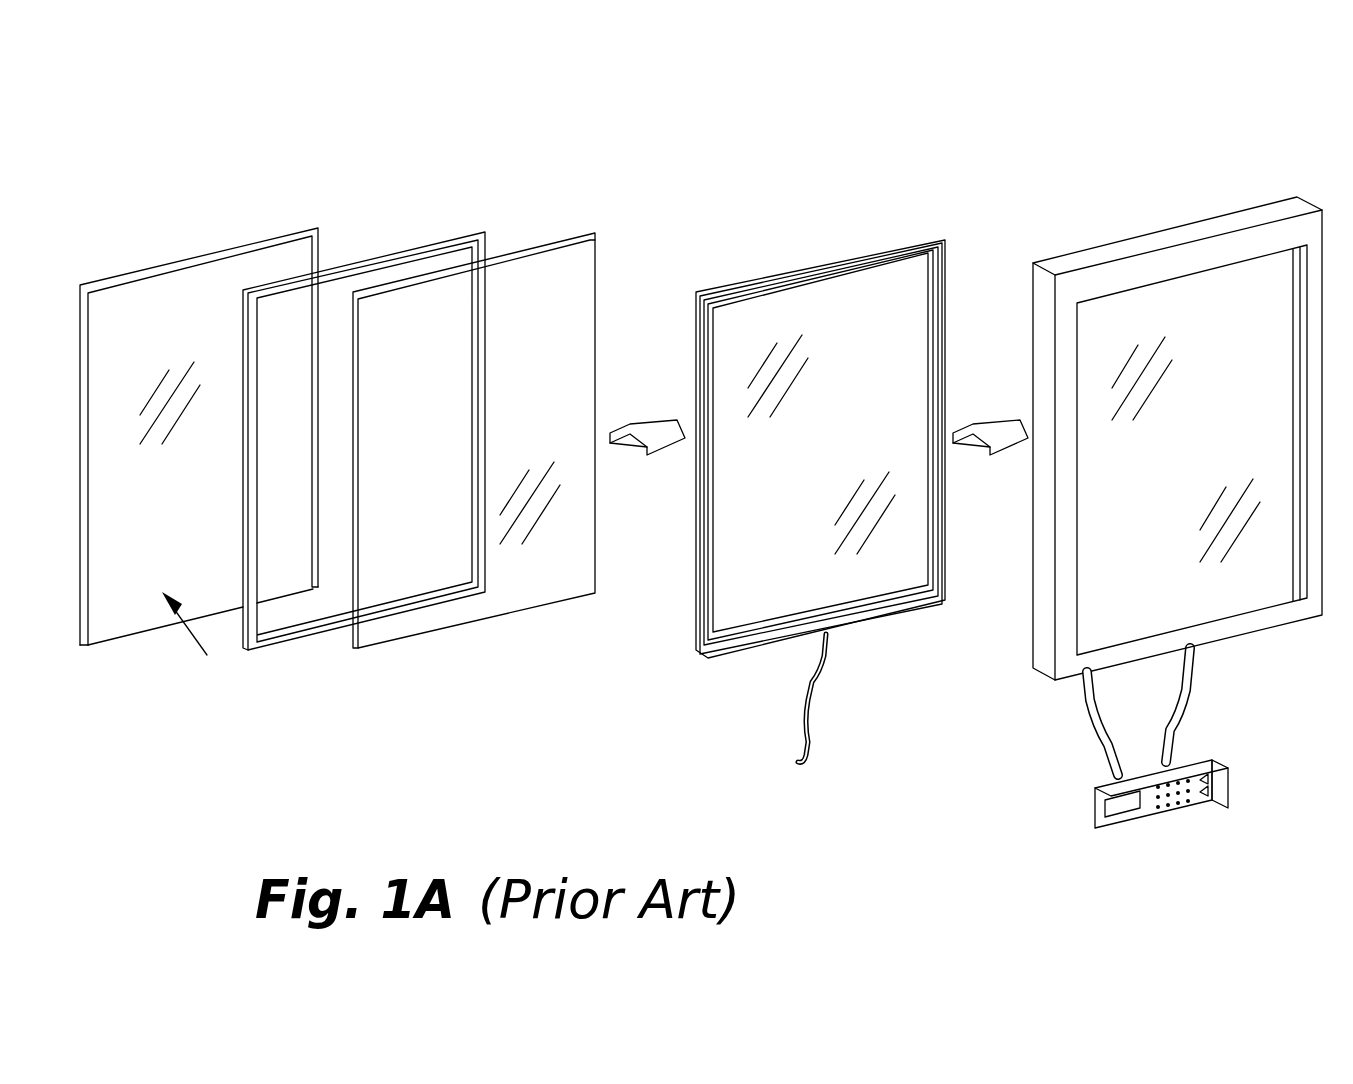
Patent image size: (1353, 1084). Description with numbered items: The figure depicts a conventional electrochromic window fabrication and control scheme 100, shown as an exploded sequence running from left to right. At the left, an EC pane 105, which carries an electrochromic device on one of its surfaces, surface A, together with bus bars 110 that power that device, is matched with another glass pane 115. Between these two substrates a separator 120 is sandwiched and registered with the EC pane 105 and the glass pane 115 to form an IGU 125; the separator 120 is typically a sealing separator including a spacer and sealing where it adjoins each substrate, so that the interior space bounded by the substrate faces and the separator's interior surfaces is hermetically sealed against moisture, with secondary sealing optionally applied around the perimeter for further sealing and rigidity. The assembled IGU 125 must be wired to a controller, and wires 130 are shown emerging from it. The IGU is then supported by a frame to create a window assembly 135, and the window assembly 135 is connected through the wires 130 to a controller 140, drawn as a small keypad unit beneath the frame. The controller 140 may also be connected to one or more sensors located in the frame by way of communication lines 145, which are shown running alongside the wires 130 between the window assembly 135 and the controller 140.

The EC window fabrication and control scheme 100 is at (128, 128).
The EC pane 105 is at (223, 252).
The bus bars 110 is at (322, 240).
The glass pane 115 is at (547, 243).
The separator 120 is at (437, 245).
The IGU 125 is at (768, 238).
The wires 130 is at (840, 694).
The window assembly 135 is at (1085, 210).
The controller 140 is at (1100, 818).
The communication lines 145 is at (1066, 735).